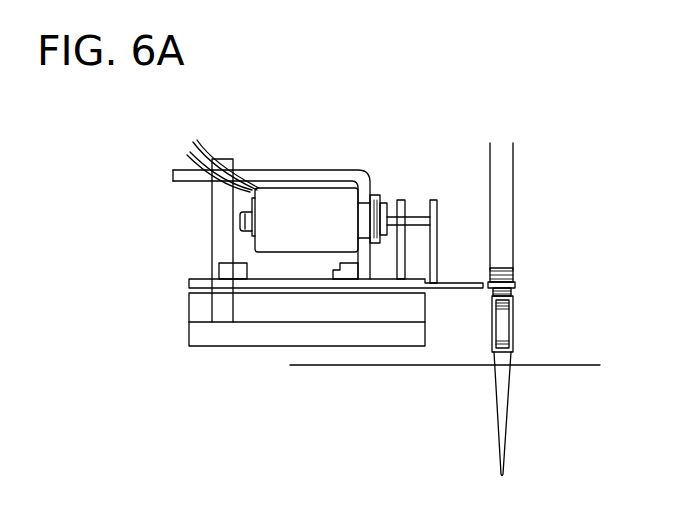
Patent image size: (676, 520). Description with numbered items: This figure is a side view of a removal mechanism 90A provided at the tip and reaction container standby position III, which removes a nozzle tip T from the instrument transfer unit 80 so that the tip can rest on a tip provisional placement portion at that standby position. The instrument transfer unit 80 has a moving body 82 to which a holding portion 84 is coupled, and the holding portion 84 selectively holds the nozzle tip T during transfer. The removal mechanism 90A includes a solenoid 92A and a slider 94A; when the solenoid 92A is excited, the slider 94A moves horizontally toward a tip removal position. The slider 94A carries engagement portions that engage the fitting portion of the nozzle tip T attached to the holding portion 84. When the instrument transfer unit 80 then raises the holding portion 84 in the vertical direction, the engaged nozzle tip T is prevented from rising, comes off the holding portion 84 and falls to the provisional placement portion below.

The instrument transfer unit 80 is at (535, 303).
The moving body 82 is at (505, 212).
The holding portion 84 is at (510, 293).
The removal mechanism 90A is at (328, 270).
The solenoid 92A is at (285, 230).
The slider 94A is at (456, 292).
The nozzle tip T is at (507, 387).
The tip and reaction container standby position III is at (568, 362).